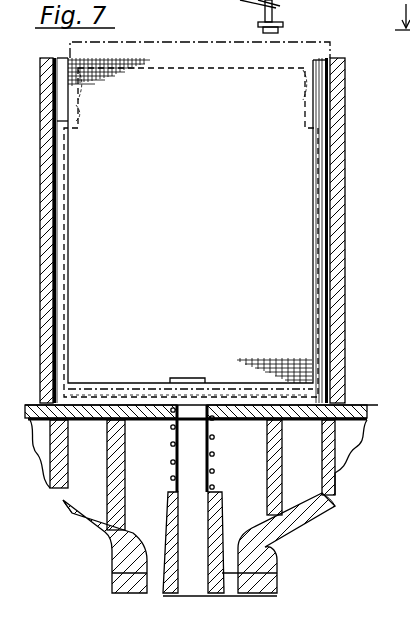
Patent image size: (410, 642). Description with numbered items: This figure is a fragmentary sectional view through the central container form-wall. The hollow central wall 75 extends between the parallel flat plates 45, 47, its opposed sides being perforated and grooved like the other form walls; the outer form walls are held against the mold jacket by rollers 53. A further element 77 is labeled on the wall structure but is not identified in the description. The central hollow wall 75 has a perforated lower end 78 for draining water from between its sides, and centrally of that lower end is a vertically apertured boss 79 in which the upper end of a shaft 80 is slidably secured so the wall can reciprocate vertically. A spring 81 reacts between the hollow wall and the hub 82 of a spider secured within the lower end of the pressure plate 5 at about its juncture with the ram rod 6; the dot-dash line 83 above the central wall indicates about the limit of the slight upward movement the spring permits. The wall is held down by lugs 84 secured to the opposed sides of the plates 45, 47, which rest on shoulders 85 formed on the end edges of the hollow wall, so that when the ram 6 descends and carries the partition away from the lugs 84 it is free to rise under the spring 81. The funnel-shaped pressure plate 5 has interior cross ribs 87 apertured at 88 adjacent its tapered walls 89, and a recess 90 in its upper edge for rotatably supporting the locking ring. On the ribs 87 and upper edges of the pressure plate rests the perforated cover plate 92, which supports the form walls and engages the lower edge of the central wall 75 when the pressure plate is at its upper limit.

The pressure plate 5 is at (317, 512).
The ram rod 6 is at (402, 28).
The flat plate 45 is at (45, 219).
The flat plate 47 is at (353, 208).
The rollers 53 is at (282, 4).
The hollow central wall 75 is at (286, 188).
The inner lining 77 is at (297, 143).
The perforated lower end 78 is at (112, 392).
The vertically apertured boss 79 is at (176, 380).
The shaft 80 is at (192, 454).
The spring 81 is at (214, 471).
The hub 82 is at (221, 513).
The dot-dash line 83 is at (206, 42).
The lugs 84 is at (61, 62).
The shoulders 85 is at (58, 113).
The cross ribs 87 is at (322, 447).
The apertures 88 is at (283, 497).
The tapered walls 89 is at (297, 520).
The recess 90 is at (80, 520).
The perforated cover plate 92 is at (347, 408).